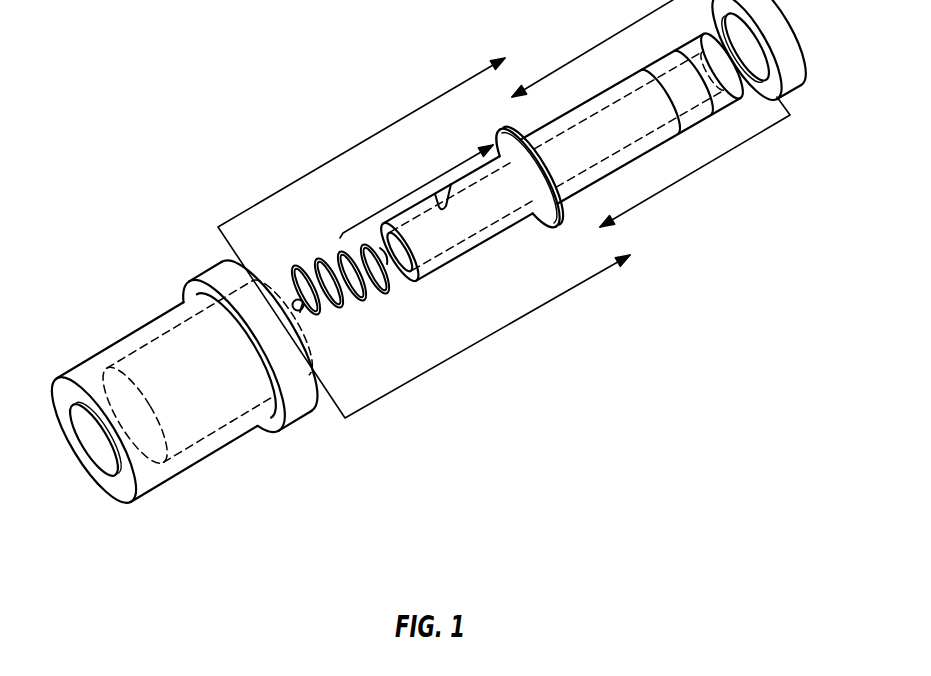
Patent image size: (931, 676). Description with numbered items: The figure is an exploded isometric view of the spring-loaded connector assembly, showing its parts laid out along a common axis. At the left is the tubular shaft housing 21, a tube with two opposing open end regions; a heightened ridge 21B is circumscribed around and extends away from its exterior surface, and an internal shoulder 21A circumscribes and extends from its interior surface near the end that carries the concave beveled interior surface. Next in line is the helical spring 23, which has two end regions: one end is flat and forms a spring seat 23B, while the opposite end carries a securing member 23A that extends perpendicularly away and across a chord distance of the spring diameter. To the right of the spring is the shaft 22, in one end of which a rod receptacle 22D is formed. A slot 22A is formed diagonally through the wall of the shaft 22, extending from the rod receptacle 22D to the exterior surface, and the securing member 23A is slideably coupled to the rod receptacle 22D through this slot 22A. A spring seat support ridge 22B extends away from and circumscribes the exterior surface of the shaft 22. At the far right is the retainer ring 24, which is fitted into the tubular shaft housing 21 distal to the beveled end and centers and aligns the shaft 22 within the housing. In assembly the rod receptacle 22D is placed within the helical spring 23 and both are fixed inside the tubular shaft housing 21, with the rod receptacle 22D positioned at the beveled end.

The tubular shaft housing 21 is at (170, 503).
The internal shoulder 21A is at (117, 373).
The heightened ridge 21B is at (297, 410).
The shaft 22 is at (643, 152).
The slot 22A is at (441, 200).
The spring seat support ridge 22B is at (558, 214).
The rod receptacle 22D is at (400, 284).
The helical spring 23 is at (322, 266).
The securing member 23A is at (297, 302).
The spring seat 23B is at (379, 260).
The retainer ring 24 is at (790, 82).